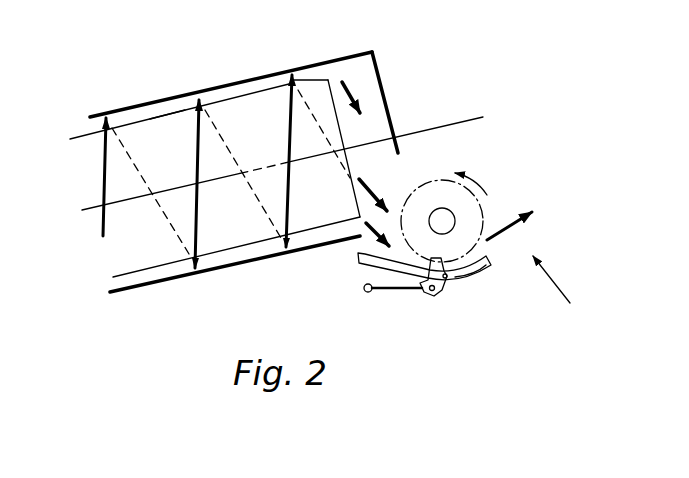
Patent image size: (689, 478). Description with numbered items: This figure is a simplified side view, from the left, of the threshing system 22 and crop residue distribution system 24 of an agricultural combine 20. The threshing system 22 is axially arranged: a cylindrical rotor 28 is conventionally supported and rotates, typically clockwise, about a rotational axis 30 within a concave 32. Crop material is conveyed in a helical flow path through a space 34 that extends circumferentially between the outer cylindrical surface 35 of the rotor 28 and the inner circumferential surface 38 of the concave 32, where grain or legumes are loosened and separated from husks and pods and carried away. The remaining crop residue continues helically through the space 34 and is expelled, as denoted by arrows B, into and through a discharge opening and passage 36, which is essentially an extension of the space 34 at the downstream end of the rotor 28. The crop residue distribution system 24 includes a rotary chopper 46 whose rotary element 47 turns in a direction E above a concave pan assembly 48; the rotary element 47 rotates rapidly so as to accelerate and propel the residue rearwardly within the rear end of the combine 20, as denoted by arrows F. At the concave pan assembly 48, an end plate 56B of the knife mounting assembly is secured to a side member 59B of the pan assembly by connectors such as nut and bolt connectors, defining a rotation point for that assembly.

The agricultural combine 20 is at (442, 67).
The threshing system 22 is at (385, 63).
The crop residue distribution system 24 is at (520, 149).
The cylindrical rotor 28 is at (312, 82).
The rotational axis 30 is at (90, 204).
The concave 32 is at (120, 110).
The space 34 is at (242, 93).
The outer cylindrical surface 35 is at (167, 117).
The discharge opening and passage 36 is at (372, 127).
The inner circumferential surface 38 is at (130, 284).
The chopper 46 is at (563, 284).
The rotary element 47 is at (467, 218).
The concave pan assembly 48 is at (357, 262).
The end plate 56B is at (440, 293).
The side member 59B is at (478, 268).
The arrows B is at (352, 87).
The direction E is at (476, 183).
The arrows F is at (522, 220).